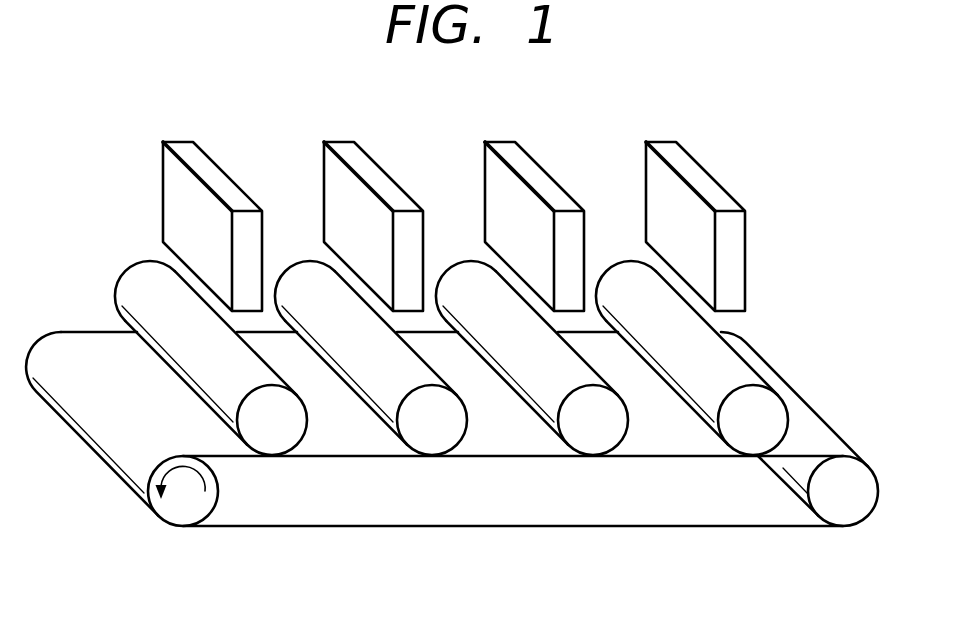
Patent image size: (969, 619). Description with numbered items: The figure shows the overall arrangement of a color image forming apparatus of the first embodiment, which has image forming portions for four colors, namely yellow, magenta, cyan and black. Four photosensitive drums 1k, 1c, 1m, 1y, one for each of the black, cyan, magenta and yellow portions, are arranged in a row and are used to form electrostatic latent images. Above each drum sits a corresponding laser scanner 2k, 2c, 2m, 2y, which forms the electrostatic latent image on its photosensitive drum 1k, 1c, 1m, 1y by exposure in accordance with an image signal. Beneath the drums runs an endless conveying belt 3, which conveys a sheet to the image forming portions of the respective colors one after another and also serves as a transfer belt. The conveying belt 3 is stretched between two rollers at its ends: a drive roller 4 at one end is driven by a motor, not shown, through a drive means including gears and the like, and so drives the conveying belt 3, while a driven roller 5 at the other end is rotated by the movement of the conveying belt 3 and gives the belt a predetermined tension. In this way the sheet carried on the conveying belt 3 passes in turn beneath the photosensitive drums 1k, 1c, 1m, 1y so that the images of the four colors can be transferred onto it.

The photosensitive drum 1k is at (282, 437).
The photosensitive drum 1c is at (438, 437).
The photosensitive drum 1m is at (607, 435).
The photosensitive drum 1y is at (768, 435).
The laser scanner 2k is at (200, 162).
The laser scanner 2c is at (361, 162).
The laser scanner 2m is at (522, 162).
The laser scanner 2y is at (683, 162).
The conveying belt 3 is at (353, 440).
The drive roller 4 is at (190, 508).
The driven roller 5 is at (858, 508).